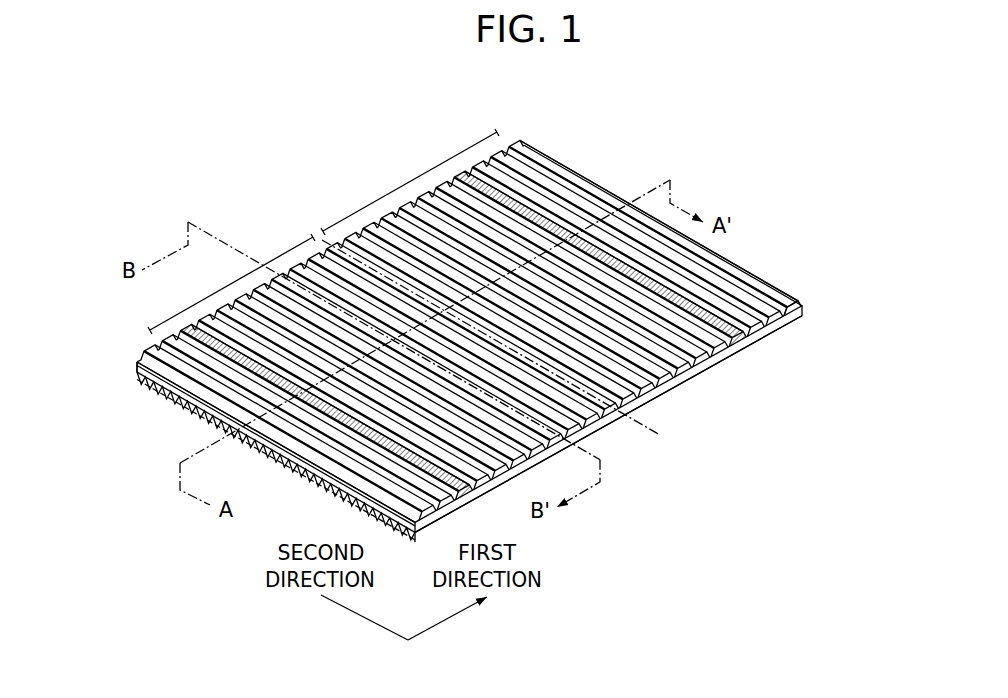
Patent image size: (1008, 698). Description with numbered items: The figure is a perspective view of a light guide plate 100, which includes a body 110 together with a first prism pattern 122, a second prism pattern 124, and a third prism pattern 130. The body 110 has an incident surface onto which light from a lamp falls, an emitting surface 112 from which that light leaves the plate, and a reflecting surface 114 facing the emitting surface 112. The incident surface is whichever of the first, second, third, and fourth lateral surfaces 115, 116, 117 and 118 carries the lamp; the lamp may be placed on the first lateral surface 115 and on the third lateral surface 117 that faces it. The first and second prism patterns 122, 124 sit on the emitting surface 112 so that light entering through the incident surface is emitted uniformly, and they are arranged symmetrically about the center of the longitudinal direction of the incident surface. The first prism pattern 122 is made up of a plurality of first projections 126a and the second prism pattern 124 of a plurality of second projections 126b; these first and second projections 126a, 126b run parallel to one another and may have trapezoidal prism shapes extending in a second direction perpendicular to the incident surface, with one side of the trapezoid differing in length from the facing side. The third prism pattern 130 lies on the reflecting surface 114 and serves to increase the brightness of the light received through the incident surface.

The light guide plate 100 is at (831, 123).
The body 110 is at (737, 353).
The emitting surface 112 is at (661, 399).
The reflecting surface 114 is at (136, 390).
The first lateral surface 115 is at (700, 379).
The second lateral surface 116 is at (627, 197).
The third lateral surface 117 is at (448, 172).
The fourth lateral surface 118 is at (200, 410).
The first prism pattern 122 is at (231, 284).
The second prism pattern 124 is at (490, 282).
The first projections 126a is at (186, 329).
The second projections 126b is at (553, 213).
The third prism pattern 130 is at (278, 468).